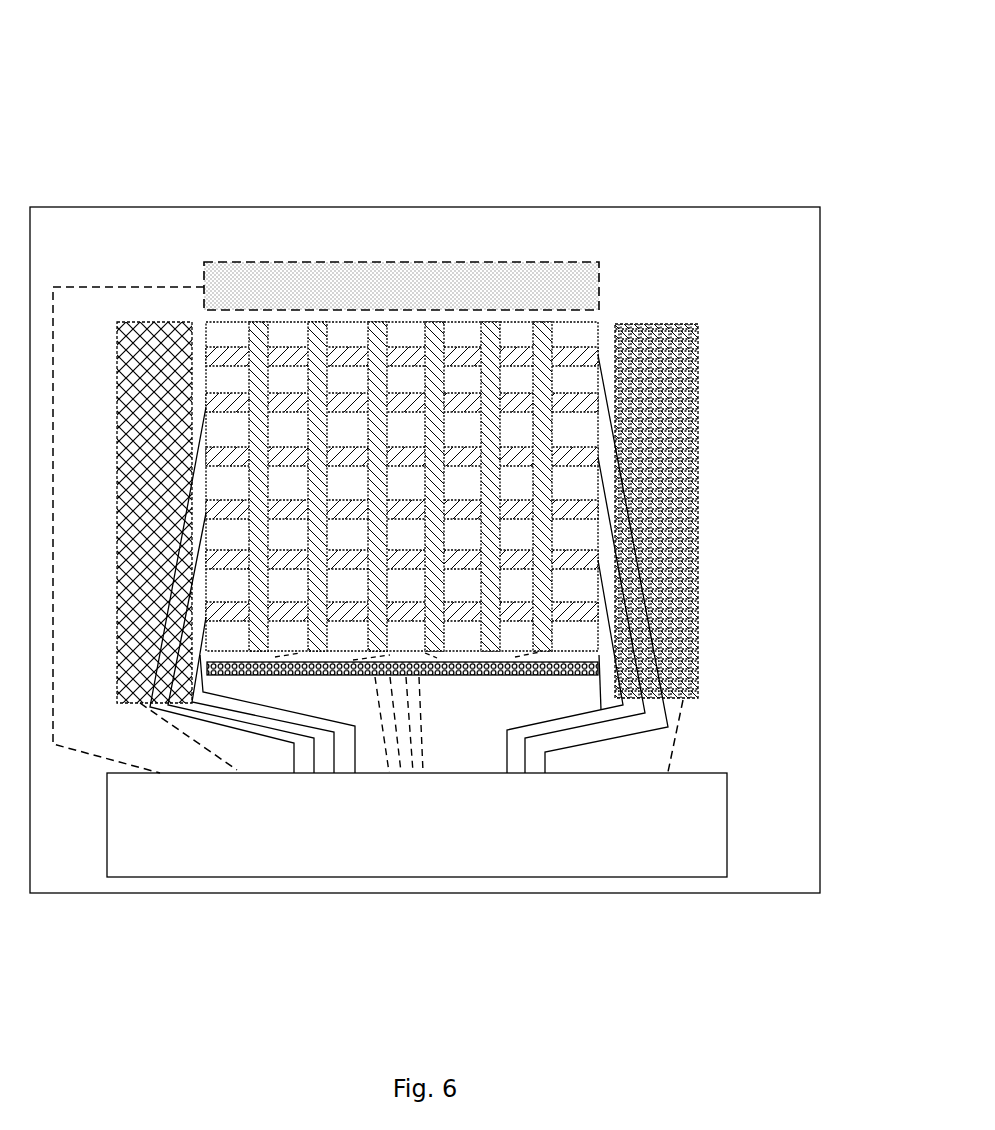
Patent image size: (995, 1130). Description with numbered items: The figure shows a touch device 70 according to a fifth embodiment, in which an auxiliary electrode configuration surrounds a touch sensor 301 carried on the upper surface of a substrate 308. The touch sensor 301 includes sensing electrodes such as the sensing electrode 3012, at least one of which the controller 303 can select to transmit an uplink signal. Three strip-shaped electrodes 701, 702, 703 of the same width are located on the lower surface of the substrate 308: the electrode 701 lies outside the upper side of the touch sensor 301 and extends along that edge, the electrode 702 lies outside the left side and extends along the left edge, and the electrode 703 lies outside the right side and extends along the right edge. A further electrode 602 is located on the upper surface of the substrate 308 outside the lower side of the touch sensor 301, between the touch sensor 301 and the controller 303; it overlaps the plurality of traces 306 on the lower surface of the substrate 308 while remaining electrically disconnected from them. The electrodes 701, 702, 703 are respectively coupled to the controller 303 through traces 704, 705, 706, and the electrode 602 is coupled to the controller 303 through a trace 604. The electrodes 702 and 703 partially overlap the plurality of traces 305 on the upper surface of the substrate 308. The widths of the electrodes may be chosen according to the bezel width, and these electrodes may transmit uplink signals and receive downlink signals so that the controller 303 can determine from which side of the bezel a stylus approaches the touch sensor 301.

The touch device 70 is at (758, 116).
The substrate 308 is at (820, 512).
The controller 303 is at (708, 832).
The electrode 701 is at (400, 275).
The trace 704 is at (70, 757).
The trace 706 is at (677, 740).
The trace 705 is at (197, 747).
The electrode 702 is at (118, 464).
The electrode 703 is at (694, 462).
The touch sensor 301 is at (402, 440).
The sensing electrode 3012 is at (258, 338).
The electrode 602 is at (547, 673).
The traces 306 is at (413, 775).
The trace 604 is at (355, 763).
The traces 305 is at (332, 763).